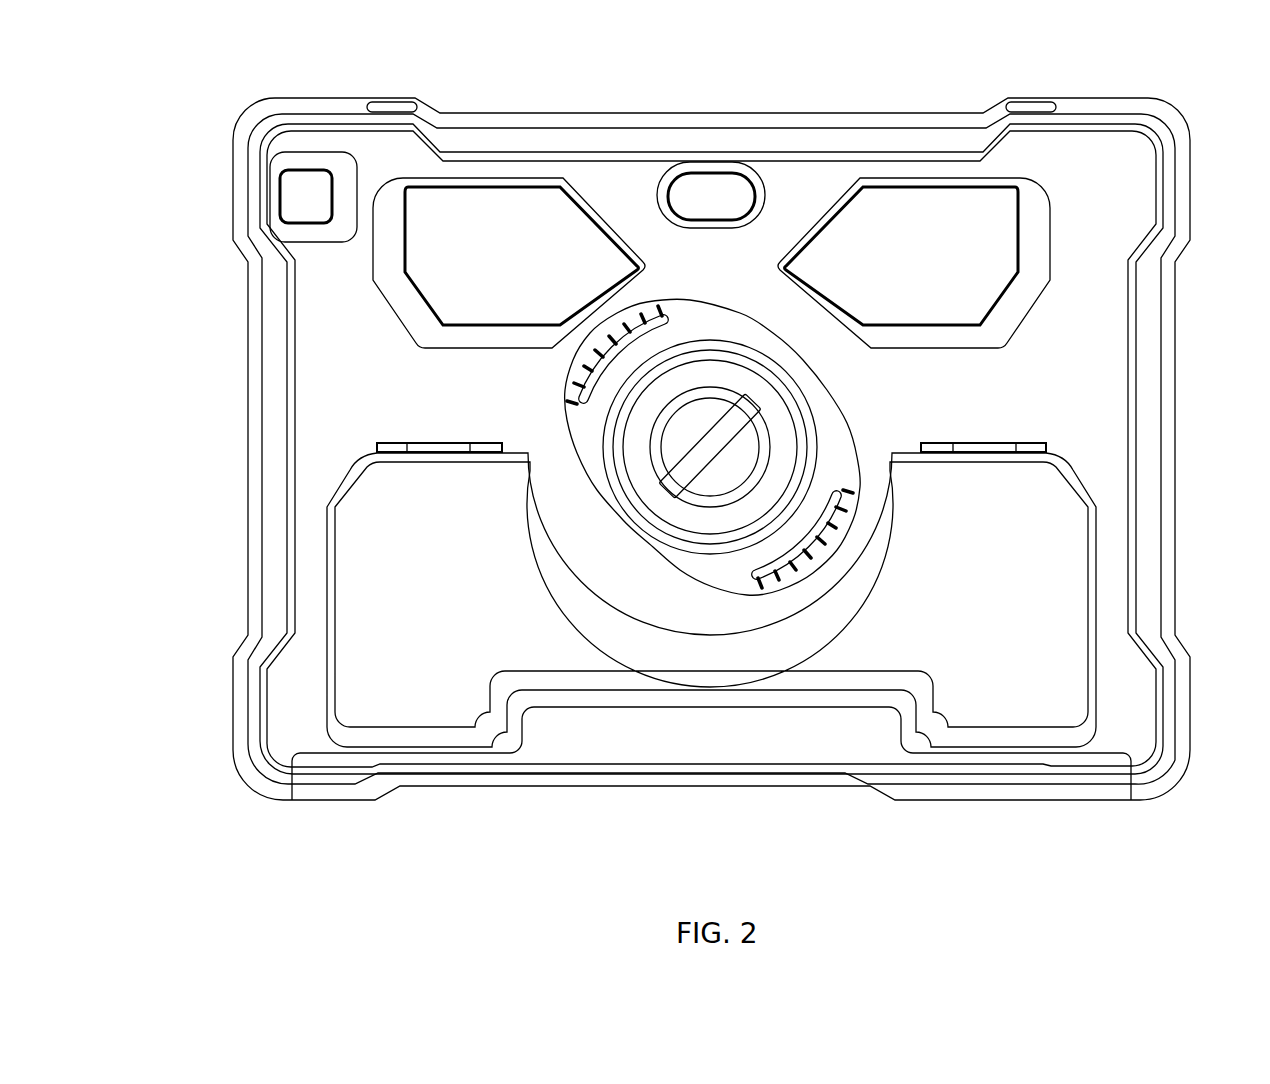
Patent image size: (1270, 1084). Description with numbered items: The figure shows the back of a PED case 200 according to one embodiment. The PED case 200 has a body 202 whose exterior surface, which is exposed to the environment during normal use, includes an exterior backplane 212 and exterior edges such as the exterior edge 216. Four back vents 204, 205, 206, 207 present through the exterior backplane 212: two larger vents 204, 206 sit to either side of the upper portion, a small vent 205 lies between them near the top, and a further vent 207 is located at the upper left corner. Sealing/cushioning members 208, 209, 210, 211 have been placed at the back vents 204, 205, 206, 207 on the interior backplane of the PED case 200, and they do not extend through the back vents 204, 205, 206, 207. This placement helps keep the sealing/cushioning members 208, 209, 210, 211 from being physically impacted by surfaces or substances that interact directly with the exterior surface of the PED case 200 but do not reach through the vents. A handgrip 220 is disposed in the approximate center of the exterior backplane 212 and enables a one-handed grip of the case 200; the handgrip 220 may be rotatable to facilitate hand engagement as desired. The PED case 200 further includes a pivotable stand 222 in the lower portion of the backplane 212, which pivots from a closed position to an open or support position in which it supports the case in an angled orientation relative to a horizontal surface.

The PED case 200 is at (277, 97).
The body 202 is at (585, 116).
The back vent 204 is at (531, 267).
The back vent 205 is at (731, 208).
The back vent 206 is at (923, 267).
The back vent 207 is at (305, 203).
The sealing/cushioning member 208 is at (587, 196).
The sealing/cushioning member 209 is at (690, 218).
The sealing/cushioning member 210 is at (880, 330).
The sealing/cushioning member 211 is at (300, 223).
The exterior backplane 212 is at (485, 407).
The exterior edge 216 is at (245, 470).
The handgrip 220 is at (845, 460).
The pivotable stand 222 is at (425, 665).